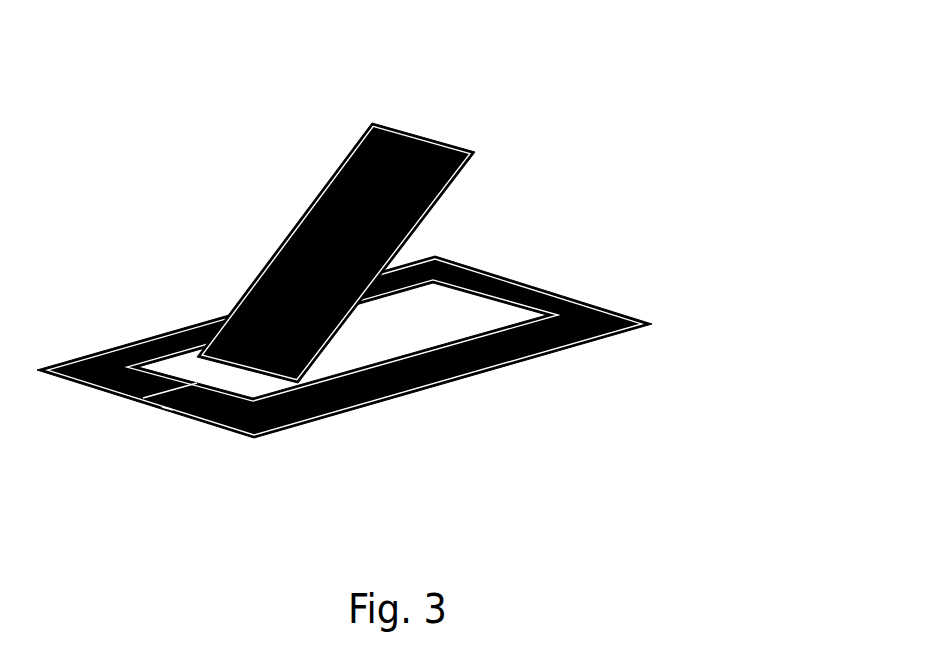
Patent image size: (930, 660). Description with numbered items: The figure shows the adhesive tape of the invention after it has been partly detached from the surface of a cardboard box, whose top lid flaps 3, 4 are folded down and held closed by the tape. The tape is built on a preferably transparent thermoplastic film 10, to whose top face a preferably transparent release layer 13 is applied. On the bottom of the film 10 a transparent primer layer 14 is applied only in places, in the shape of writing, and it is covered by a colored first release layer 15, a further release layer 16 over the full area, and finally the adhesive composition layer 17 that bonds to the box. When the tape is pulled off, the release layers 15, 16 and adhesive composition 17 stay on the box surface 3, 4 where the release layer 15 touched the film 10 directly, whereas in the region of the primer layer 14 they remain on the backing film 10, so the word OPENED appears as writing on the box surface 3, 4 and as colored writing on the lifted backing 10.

The top lid flap 3 is at (385, 326).
The top lid flap 4 is at (190, 330).
The thermoplastic film 10 is at (503, 218).
The release layer 13 is at (503, 218).
The primer layer 14 is at (393, 183).
The first release layer 15 is at (490, 357).
The further release layer 16 is at (490, 357).
The adhesive composition layer 17 is at (463, 340).